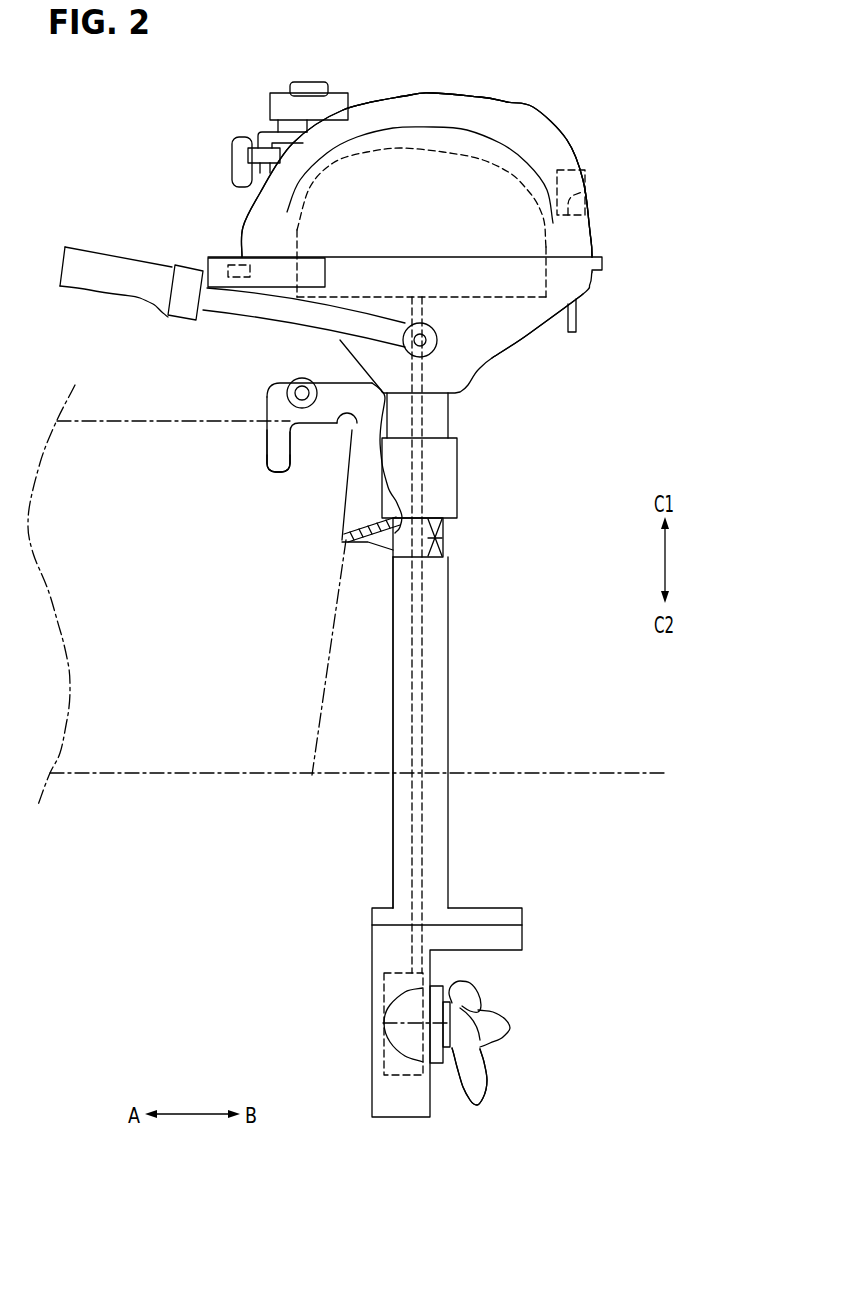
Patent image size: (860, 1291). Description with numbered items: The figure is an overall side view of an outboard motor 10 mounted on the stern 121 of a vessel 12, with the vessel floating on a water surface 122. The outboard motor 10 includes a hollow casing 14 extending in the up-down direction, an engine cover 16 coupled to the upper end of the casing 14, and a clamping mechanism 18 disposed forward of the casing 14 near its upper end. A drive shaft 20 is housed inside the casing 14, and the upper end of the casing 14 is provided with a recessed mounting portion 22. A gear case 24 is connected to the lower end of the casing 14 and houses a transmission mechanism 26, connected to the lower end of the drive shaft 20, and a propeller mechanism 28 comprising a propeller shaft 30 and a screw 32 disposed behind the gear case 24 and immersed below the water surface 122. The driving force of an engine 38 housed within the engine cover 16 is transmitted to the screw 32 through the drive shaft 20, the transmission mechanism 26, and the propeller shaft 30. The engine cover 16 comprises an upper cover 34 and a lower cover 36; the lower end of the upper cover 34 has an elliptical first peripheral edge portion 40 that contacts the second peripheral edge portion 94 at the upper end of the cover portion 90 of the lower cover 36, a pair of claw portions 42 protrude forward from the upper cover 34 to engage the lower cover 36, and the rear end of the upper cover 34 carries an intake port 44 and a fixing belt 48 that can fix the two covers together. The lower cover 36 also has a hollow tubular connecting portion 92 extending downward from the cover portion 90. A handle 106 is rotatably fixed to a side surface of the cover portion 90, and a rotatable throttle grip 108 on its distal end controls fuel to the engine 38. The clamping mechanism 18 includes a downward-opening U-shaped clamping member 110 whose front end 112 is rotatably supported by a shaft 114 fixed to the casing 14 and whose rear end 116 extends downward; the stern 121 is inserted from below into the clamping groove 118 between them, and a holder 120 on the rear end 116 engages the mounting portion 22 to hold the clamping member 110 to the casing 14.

The outboard motor 10 is at (131, 103).
The vessel 12 is at (112, 420).
The casing 14 is at (452, 618).
The engine cover 16 is at (513, 97).
The clamping mechanism 18 is at (262, 472).
The drive shaft 20 is at (417, 706).
The mounting portion 22 is at (436, 548).
The gear case 24 is at (383, 1088).
The transmission mechanism 26 is at (393, 987).
The propeller mechanism 28 is at (480, 983).
The propeller shaft 30 is at (383, 1023).
The screw 32 is at (473, 1080).
The upper cover 34 is at (427, 112).
The lower cover 36 is at (532, 332).
The engine 38 is at (388, 170).
The first peripheral edge portion 40 is at (580, 243).
The claw portions 42 is at (230, 256).
The intake port 44 is at (586, 190).
The fixing belt 48 is at (580, 318).
The cover portion 90 is at (505, 335).
The connecting portion 92 is at (440, 418).
The second peripheral edge portion 94 is at (602, 264).
The handle 106 is at (227, 307).
The throttle grip 108 is at (103, 280).
The clamping member 110 is at (265, 402).
The front end 112 is at (277, 447).
The shaft 114 is at (298, 385).
The rear end 116 is at (357, 517).
The clamping groove 118 is at (345, 452).
The holder 120 is at (432, 530).
The stern 121 is at (312, 700).
The water surface 122 is at (538, 777).